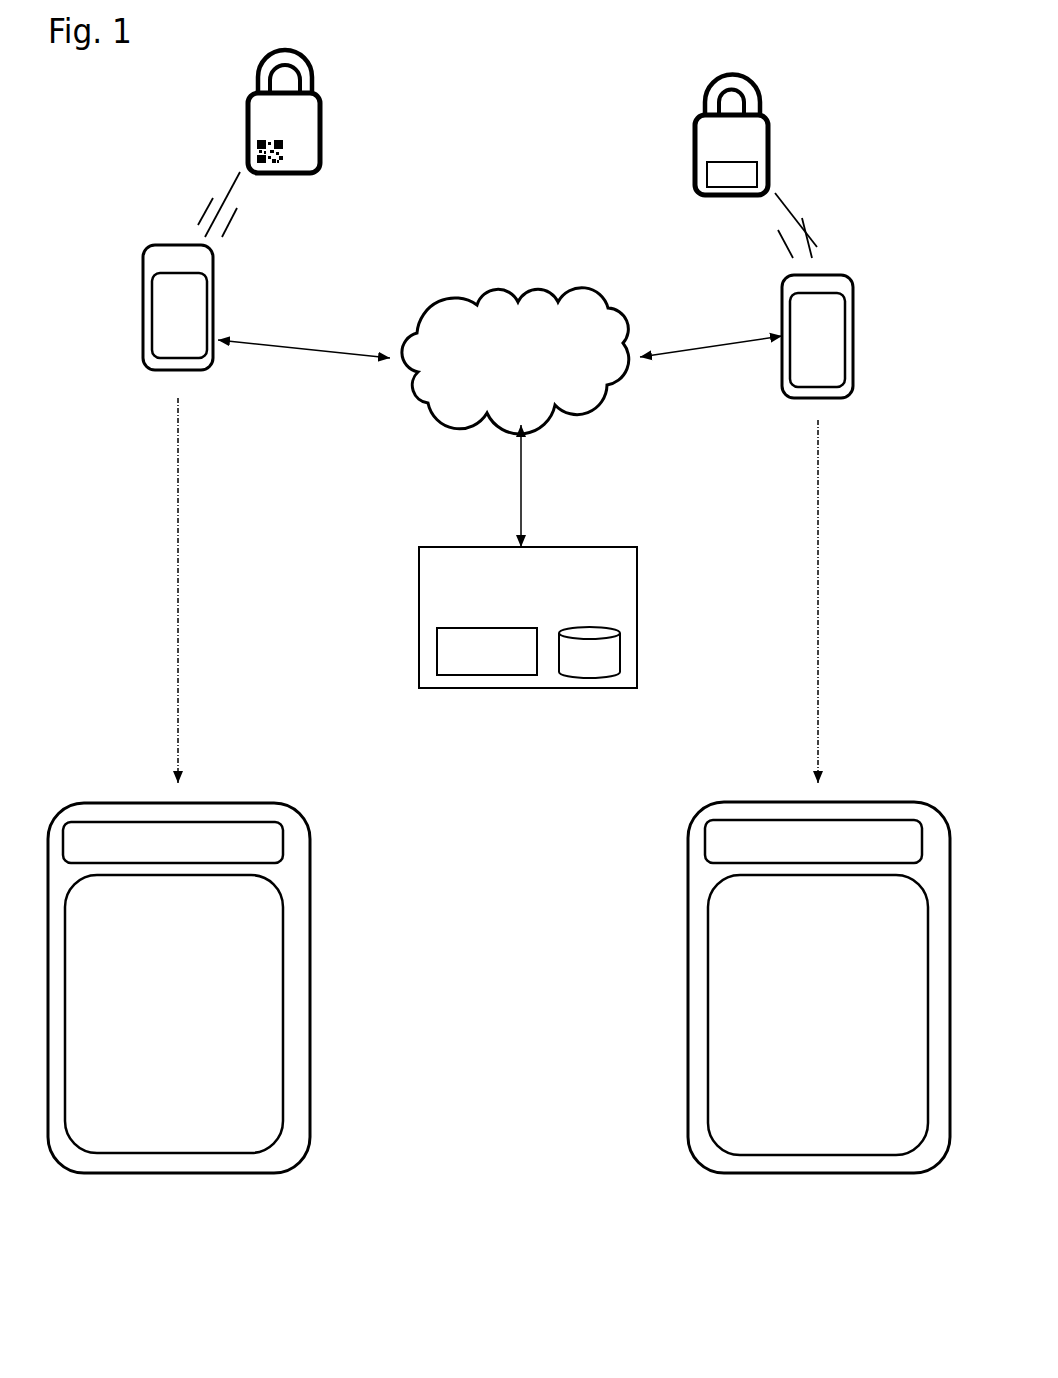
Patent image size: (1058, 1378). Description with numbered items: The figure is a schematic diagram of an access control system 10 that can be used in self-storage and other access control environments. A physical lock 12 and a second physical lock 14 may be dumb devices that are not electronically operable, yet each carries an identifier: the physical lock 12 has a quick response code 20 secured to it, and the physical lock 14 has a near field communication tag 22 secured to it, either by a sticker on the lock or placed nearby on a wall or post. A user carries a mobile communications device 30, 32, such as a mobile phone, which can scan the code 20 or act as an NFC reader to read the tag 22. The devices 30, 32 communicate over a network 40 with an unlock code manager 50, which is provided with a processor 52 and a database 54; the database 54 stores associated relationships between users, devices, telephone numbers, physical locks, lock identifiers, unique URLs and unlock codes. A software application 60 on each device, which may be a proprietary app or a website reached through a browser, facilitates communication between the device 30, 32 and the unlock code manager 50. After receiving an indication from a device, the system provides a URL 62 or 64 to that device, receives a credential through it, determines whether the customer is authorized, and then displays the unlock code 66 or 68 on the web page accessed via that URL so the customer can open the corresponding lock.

The access control system 10 is at (895, 92).
The physical lock 12 is at (318, 67).
The second physical lock 14 is at (760, 92).
The quick response (QR) code 20 is at (257, 143).
The near field communication (NFC) tag 22 is at (700, 165).
The mobile communications device 30 is at (143, 272).
The mobile communications device 32 is at (853, 322).
The network 40 is at (515, 361).
The unlock code manager 50 is at (417, 565).
The processor 52 is at (465, 663).
The database 54 is at (592, 663).
The software application 60 is at (268, 1123).
The URL 62 is at (283, 845).
The URL 64 is at (706, 843).
The unlock code 66 is at (215, 988).
The unlock code 68 is at (778, 995).